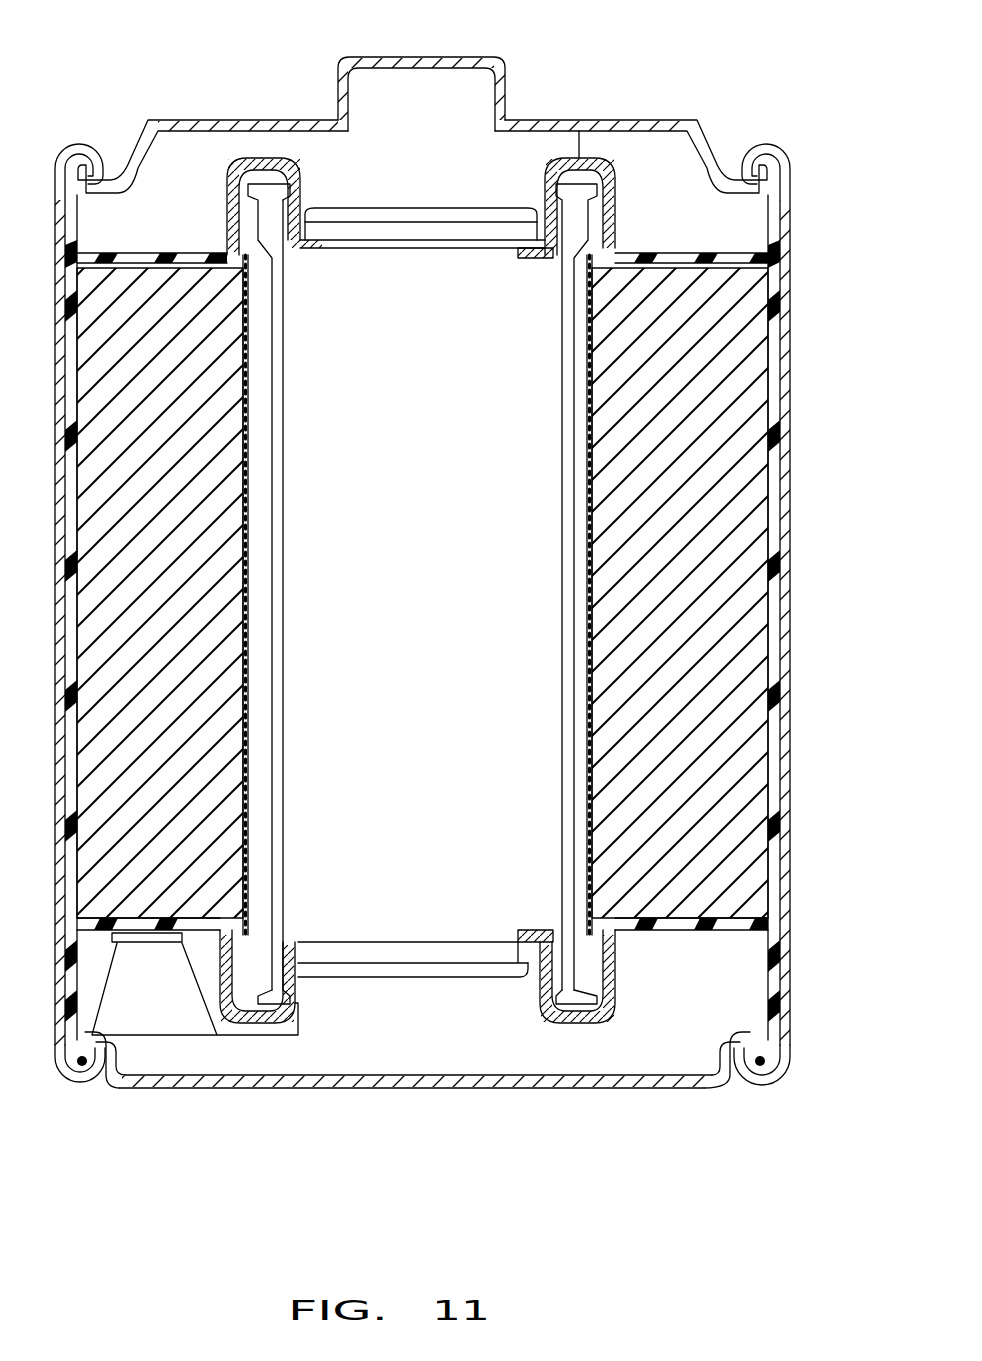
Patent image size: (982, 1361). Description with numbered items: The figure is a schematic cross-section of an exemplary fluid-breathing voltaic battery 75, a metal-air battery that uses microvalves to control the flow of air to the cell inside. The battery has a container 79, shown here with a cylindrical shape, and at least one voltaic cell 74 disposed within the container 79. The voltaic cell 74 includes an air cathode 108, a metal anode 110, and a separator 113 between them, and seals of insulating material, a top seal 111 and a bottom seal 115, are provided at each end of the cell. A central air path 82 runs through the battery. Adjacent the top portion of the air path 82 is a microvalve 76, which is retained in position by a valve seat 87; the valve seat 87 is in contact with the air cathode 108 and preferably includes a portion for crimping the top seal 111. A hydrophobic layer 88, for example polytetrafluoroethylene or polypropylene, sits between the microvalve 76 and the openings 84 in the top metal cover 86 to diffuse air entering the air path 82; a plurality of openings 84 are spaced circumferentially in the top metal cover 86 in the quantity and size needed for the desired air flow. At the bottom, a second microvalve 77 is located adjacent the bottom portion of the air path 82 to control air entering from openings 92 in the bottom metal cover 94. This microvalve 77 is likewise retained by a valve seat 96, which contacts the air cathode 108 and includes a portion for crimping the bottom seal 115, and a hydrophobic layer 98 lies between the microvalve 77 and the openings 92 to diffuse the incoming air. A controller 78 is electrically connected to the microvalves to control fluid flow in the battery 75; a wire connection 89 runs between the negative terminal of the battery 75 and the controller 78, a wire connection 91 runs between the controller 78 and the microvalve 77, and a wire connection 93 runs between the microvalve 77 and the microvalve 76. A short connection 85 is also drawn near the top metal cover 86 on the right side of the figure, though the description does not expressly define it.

The fluid-breathing voltaic battery 75 is at (466, 522).
The container 79 is at (786, 404).
The openings 84 is at (225, 118).
The top metal cover 86 is at (498, 58).
The weld connection 85 is at (592, 147).
The hydrophobic layer 88 is at (440, 213).
The microvalve 76 is at (414, 236).
The valve seat 87 is at (540, 260).
The top seal 111 is at (722, 262).
The separator 113 is at (594, 372).
The air path 82 is at (274, 413).
The wire connection 93 is at (284, 717).
The air cathode 108 is at (566, 458).
The metal anode 110 is at (642, 637).
The voltaic cell 74 is at (463, 593).
The bottom seal 115 is at (740, 922).
The valve seat 96 is at (526, 930).
The second microvalve 77 is at (360, 944).
The hydrophobic layer 98 is at (394, 979).
The controller 78 is at (142, 950).
The wire connection 89 is at (98, 997).
The wire connection 91 is at (299, 1028).
The openings 92 is at (190, 1084).
The bottom metal cover 94 is at (378, 1090).